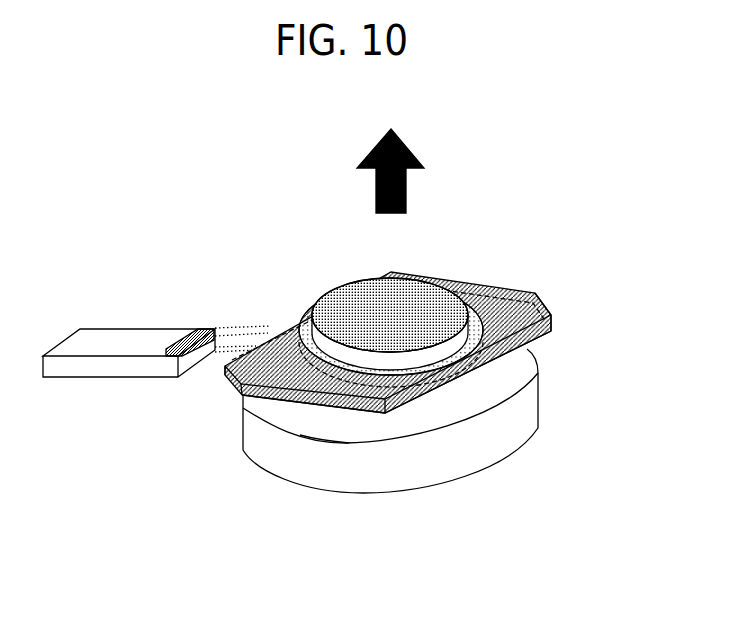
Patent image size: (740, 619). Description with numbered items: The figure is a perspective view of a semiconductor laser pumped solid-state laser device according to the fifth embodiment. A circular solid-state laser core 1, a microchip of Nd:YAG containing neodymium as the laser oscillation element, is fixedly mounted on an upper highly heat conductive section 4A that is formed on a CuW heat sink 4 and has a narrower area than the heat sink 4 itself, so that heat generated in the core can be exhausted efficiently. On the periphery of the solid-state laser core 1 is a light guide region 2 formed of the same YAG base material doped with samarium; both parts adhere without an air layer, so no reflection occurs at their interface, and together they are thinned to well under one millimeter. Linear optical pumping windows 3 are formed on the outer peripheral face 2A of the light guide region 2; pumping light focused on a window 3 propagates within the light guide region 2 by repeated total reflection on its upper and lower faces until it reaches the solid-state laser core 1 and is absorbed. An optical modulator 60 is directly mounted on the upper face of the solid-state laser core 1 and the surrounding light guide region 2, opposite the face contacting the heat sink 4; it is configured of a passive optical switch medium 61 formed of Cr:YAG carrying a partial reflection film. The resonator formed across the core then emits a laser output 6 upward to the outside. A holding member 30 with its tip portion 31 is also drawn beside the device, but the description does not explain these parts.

The solid-state laser core 1 is at (436, 388).
The light guide region 2 is at (545, 305).
The outer peripheral face 2A is at (552, 330).
The optical pumping window 3 is at (498, 367).
The heat sink 4 is at (448, 455).
The upper highly heat conductive section 4A is at (403, 415).
The laser output 6 is at (413, 153).
The holding member 30 is at (202, 327).
The tip portion 31 is at (217, 356).
The optical modulator 60 is at (333, 287).
The passive optical switch medium 61 is at (435, 280).